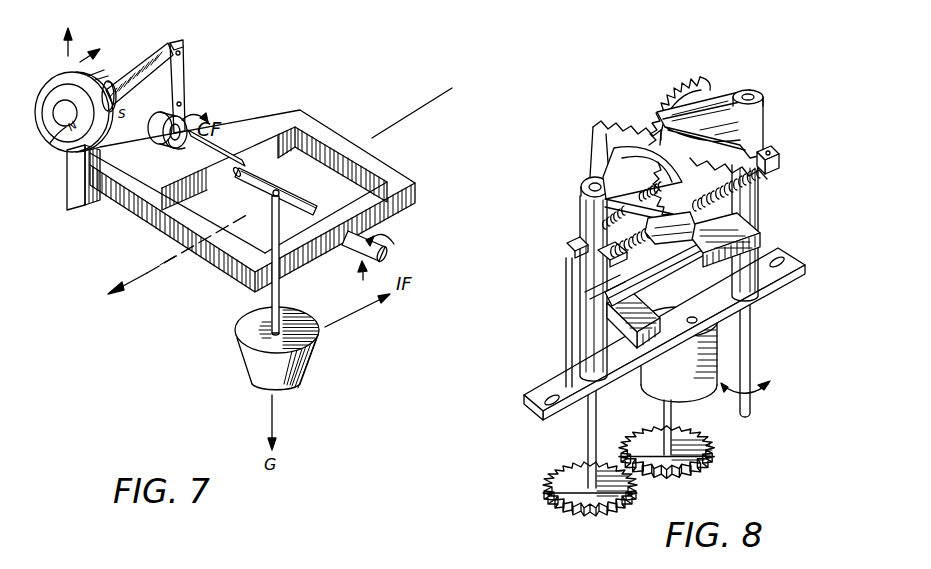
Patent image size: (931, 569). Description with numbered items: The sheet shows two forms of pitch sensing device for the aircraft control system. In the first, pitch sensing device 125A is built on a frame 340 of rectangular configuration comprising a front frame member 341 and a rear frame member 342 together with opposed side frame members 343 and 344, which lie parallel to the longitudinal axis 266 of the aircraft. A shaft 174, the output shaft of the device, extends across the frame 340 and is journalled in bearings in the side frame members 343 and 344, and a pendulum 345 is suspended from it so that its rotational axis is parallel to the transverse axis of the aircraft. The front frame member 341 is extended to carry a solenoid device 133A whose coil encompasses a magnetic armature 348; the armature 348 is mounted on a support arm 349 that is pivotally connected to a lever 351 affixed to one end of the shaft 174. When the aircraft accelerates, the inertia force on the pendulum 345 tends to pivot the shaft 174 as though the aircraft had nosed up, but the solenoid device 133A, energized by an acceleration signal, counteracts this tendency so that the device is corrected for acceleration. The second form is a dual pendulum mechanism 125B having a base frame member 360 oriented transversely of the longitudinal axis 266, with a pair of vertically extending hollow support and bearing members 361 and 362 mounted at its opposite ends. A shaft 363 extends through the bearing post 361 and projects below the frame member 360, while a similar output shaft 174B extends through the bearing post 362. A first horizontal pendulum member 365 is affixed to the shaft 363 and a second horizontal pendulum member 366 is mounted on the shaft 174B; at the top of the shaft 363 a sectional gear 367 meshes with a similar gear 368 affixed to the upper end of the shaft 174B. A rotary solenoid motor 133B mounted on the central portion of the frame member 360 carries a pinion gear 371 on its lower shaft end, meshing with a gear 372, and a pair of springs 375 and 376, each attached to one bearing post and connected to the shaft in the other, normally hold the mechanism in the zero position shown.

In FIG. 7, the frame 340 is at (392, 162).
In FIG. 7, the front frame member 341 is at (217, 250).
In FIG. 7, the rear frame member 342 is at (319, 136).
In FIG. 7, the side frame member 343 is at (394, 228).
In FIG. 7, the side frame member 344 is at (267, 140).
In FIG. 7, the pendulum 345 is at (224, 224).
In FIG. 7, the shaft 174 is at (333, 203).
In FIG. 7, the magnetic armature 348 is at (67, 122).
In FIG. 7, the support arm 349 is at (130, 73).
In FIG. 7, the lever 351 is at (183, 74).
In FIG. 7, the solenoid device 133A is at (83, 152).
In FIG. 7, the pitch sensing device 125A is at (226, 325).
In FIG. 7, the longitudinal axis 266 is at (136, 280).
In FIG. 8, the dual pendulum mechanism 125B is at (565, 180).
In FIG. 8, the rotary solenoid motor 133B is at (690, 401).
In FIG. 8, the output shaft 174B is at (742, 328).
In FIG. 8, the base frame member 360 is at (563, 387).
In FIG. 8, the support and bearing member 361 is at (592, 307).
In FIG. 8, the support and bearing member 362 is at (753, 207).
In FIG. 8, the shaft 363 is at (590, 436).
In FIG. 8, the first horizontal pendulum member 365 is at (740, 247).
In FIG. 8, the second horizontal pendulum member 366 is at (623, 323).
In FIG. 8, the sectional gear 367 is at (633, 110).
In FIG. 8, the gear 368 is at (697, 98).
In FIG. 8, the pinion gear 371 is at (708, 441).
In FIG. 8, the gear 372 is at (547, 483).
In FIG. 8, the spring 375 is at (760, 182).
In FIG. 8, the spring 376 is at (613, 215).